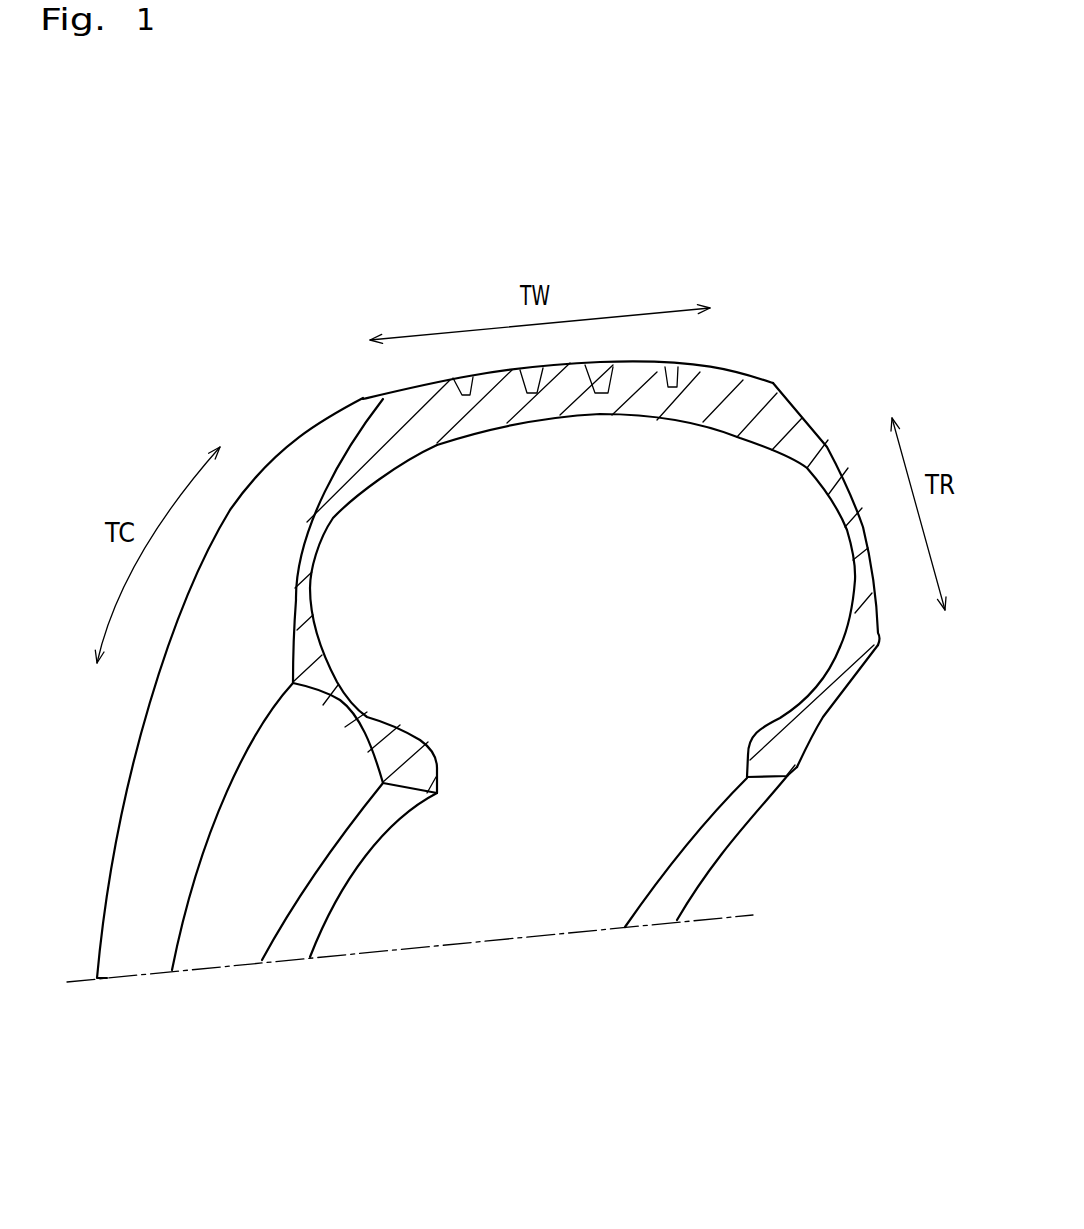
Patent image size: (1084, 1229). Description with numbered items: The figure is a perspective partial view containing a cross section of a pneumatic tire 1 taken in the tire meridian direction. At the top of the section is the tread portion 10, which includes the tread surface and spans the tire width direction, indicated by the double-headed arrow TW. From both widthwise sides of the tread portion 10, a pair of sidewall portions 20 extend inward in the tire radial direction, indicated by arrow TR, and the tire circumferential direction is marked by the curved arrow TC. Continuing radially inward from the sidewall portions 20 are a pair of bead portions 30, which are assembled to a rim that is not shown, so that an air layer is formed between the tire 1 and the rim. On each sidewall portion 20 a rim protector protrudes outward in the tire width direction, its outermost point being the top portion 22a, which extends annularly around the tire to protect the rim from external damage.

The pneumatic tire 1 is at (798, 345).
The tread portion 10 is at (363, 400).
The sidewall portion 20 is at (830, 450).
The top portion 22a is at (170, 956).
The bead portion 30 is at (223, 943).